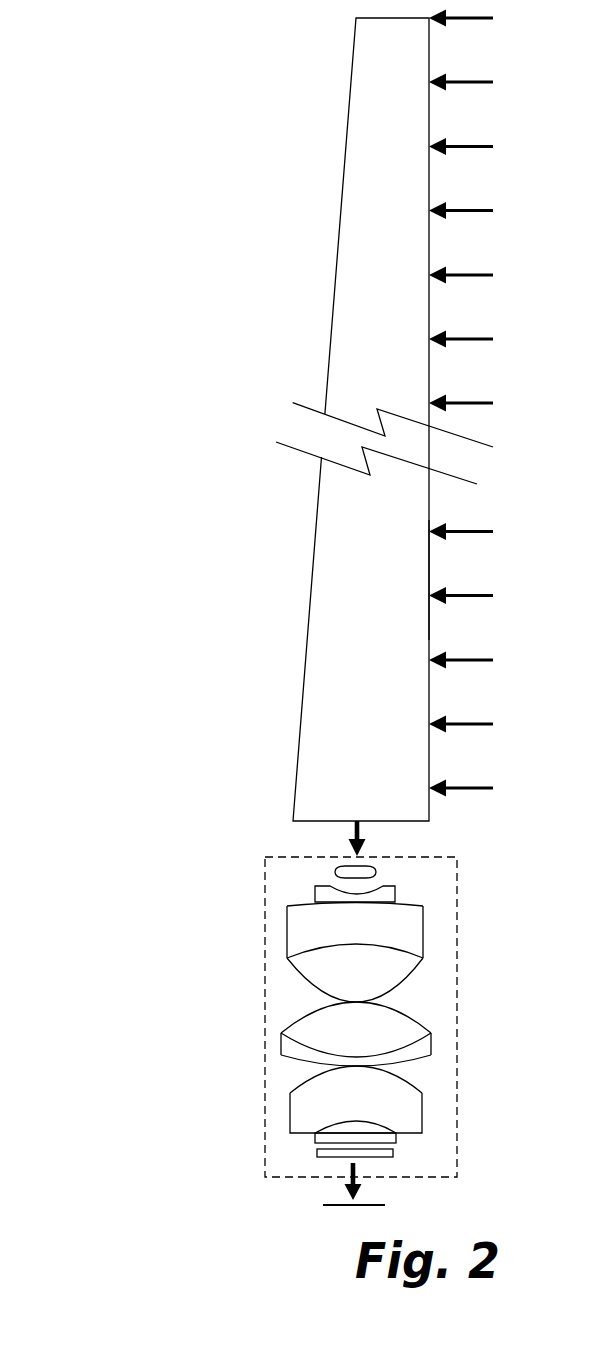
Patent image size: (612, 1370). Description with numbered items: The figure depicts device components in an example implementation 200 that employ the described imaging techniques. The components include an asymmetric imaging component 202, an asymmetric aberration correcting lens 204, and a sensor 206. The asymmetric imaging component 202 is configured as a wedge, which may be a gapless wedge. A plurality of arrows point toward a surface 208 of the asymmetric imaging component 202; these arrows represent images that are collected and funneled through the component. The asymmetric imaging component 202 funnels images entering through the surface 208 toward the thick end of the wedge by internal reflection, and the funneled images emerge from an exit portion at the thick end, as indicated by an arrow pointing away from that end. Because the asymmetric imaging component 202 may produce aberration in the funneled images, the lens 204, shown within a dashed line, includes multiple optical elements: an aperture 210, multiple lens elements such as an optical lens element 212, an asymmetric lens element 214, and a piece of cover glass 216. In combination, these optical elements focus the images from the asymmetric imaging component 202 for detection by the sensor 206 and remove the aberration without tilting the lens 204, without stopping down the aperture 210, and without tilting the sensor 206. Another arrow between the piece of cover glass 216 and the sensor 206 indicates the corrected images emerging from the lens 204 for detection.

The example implementation 200 is at (165, 154).
The asymmetric imaging component 202 is at (393, 378).
The asymmetric aberration correcting lens 204 is at (438, 890).
The sensor 206 is at (375, 1198).
The surface 208 is at (426, 575).
The aperture 210 is at (336, 875).
The optical lens element 212 is at (341, 939).
The asymmetric lens element 214 is at (343, 1135).
The piece of cover glass 216 is at (316, 1151).